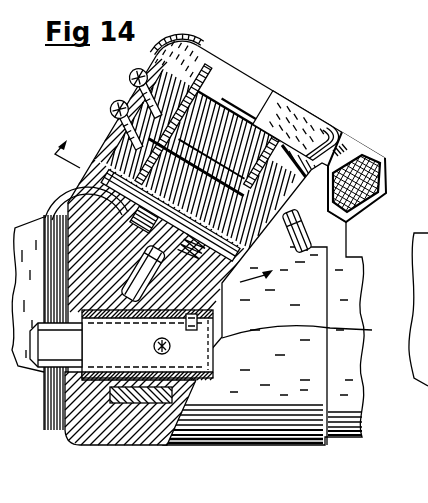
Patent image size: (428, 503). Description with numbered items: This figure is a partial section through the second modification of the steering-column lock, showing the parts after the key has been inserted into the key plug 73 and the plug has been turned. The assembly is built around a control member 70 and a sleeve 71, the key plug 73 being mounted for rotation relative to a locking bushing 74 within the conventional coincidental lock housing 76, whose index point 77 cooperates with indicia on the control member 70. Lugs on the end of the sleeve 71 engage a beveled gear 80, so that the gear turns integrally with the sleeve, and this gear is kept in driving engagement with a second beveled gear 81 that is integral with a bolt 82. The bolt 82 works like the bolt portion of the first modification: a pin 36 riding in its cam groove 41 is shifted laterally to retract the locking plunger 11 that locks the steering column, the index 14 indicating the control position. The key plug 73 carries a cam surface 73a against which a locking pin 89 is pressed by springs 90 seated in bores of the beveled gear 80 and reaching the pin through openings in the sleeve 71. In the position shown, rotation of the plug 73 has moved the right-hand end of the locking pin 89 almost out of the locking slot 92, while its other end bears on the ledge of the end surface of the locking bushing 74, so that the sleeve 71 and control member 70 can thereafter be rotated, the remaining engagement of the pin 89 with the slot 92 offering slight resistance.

The locking plunger 11 is at (28, 365).
The index 14 is at (172, 204).
The pin 36 is at (153, 345).
The cam groove 41 is at (172, 353).
The control member 70 is at (292, 117).
The sleeve 71 is at (160, 148).
The key plug 73 is at (240, 127).
The cam surface 73a is at (255, 138).
The locking bushing 74 is at (160, 115).
The housing 76 is at (120, 340).
The index point 77 is at (188, 35).
The beveled gear 80 is at (83, 185).
The second beveled gear 81 is at (277, 304).
The bolt 82 is at (72, 445).
The locking pin 89 is at (147, 220).
The springs 90 is at (147, 252).
The locking slot 92 is at (275, 240).